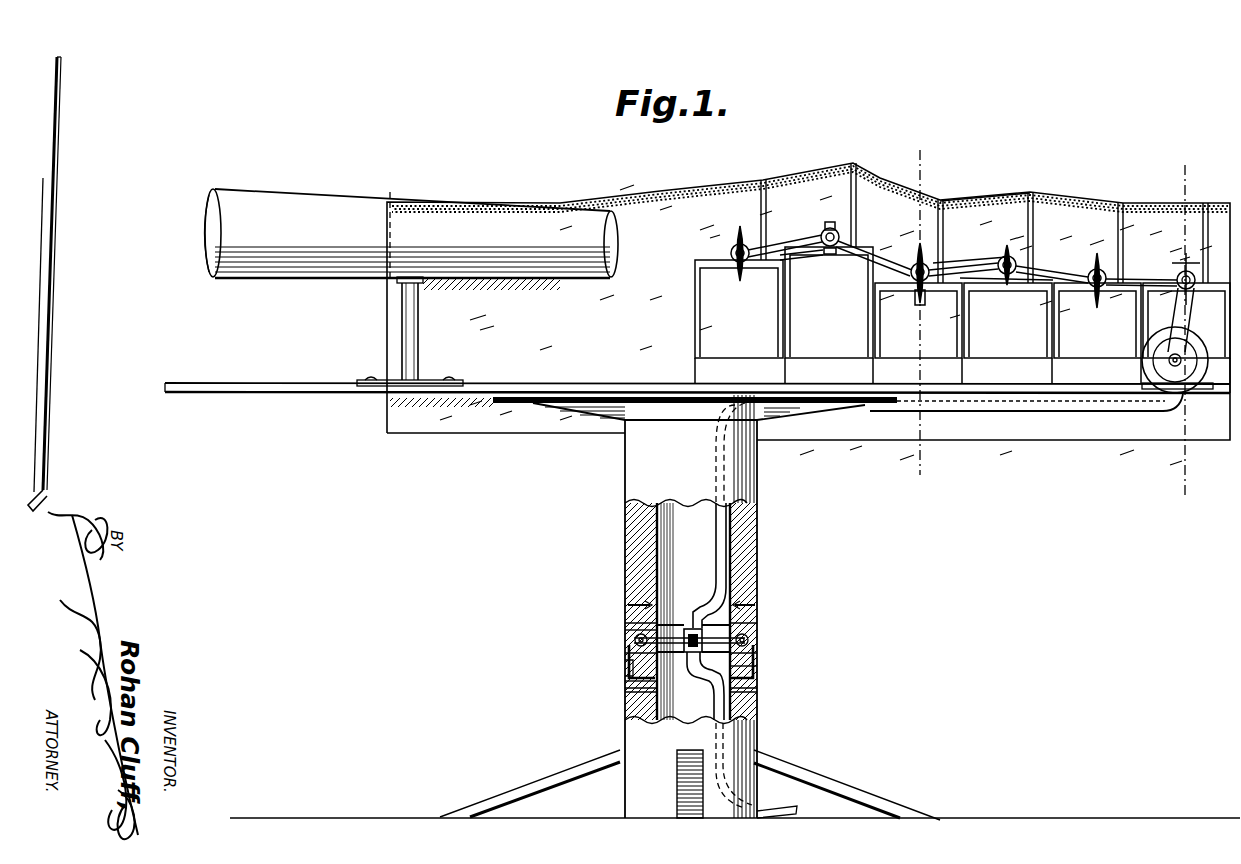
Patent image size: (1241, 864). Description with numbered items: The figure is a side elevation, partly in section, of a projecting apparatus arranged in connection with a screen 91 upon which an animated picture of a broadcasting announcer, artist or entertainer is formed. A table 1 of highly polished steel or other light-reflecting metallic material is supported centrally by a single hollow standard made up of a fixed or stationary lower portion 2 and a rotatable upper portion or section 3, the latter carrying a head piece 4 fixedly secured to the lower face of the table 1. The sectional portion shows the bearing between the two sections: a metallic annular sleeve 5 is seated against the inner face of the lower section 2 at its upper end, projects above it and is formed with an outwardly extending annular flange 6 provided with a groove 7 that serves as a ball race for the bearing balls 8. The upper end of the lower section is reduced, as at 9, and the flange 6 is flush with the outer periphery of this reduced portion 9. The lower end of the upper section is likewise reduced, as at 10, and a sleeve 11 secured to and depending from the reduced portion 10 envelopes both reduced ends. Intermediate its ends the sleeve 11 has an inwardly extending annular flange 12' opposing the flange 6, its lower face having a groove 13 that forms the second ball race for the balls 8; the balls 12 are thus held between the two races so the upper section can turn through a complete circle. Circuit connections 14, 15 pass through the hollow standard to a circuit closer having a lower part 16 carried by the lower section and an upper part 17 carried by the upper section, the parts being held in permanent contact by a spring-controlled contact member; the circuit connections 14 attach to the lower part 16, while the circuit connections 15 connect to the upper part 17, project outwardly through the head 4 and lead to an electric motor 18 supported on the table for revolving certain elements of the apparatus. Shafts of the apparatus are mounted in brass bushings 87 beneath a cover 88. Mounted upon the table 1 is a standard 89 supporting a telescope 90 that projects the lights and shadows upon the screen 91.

The table 1 is at (255, 383).
The lower portion of the standard 2 is at (760, 699).
The upper portion of the standard 3 is at (752, 554).
The head piece 4 is at (600, 408).
The metallic annular sleeve 5 is at (597, 695).
The outwardly extending annular flange 6 is at (596, 677).
The groove 7 is at (622, 650).
The bearing balls 8 is at (753, 638).
The reduced portion of the lower section 9 is at (650, 678).
The reduced portion of the upper section 10 is at (647, 603).
The sleeve 11 is at (626, 615).
The rollers 12 is at (699, 641).
The inwardly extending annular flange 12' is at (773, 629).
The groove 13 is at (624, 628).
The circuit connections 14 is at (740, 681).
The circuit connections 15 is at (712, 537).
The lower part of the circuit closer 16 is at (688, 655).
The upper part of the circuit closer 17 is at (692, 629).
The electric motor 18 is at (1188, 346).
The brass bushings 87 is at (764, 200).
The rail 88 is at (975, 198).
The standard 89 is at (402, 314).
The telescope 90 is at (332, 205).
The screen 91 is at (64, 215).